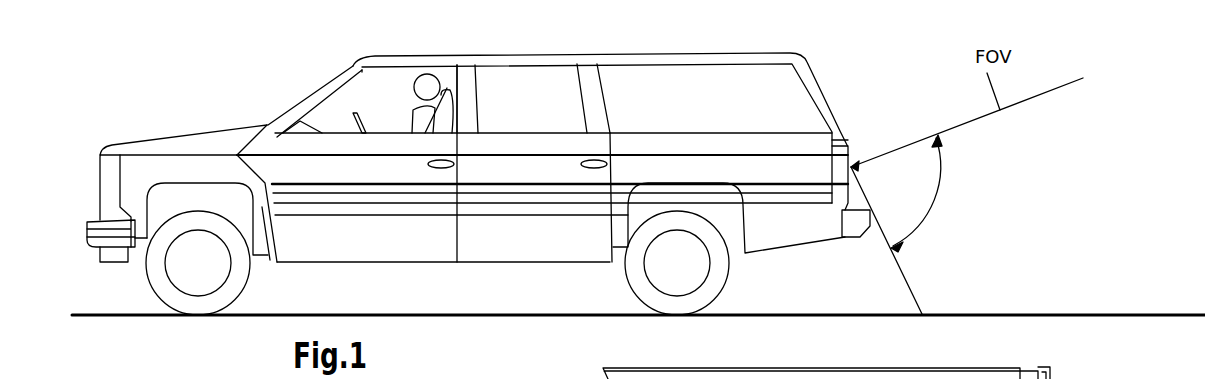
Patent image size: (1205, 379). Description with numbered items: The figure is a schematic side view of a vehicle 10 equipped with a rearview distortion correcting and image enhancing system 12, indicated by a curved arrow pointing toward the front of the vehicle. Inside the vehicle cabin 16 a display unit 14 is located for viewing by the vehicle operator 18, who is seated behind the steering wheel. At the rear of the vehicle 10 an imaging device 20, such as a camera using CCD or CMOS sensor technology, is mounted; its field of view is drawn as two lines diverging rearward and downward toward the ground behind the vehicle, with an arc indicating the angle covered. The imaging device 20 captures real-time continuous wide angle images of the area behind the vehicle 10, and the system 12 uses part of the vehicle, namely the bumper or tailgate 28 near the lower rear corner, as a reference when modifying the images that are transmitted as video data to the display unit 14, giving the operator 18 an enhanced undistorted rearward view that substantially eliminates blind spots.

The vehicle 10 is at (531, 243).
The rearview distortion correcting and image enhancing system 12 is at (218, 76).
The display unit 14 is at (302, 125).
The vehicle cabin 16 is at (377, 92).
The vehicle operator 18 is at (428, 76).
The imaging device 20 is at (855, 165).
The vehicle bumper or tailgate 28 is at (860, 221).